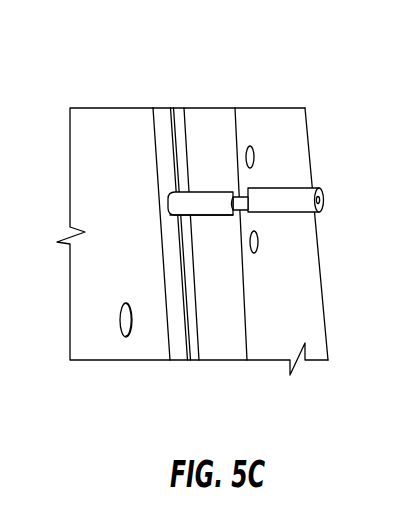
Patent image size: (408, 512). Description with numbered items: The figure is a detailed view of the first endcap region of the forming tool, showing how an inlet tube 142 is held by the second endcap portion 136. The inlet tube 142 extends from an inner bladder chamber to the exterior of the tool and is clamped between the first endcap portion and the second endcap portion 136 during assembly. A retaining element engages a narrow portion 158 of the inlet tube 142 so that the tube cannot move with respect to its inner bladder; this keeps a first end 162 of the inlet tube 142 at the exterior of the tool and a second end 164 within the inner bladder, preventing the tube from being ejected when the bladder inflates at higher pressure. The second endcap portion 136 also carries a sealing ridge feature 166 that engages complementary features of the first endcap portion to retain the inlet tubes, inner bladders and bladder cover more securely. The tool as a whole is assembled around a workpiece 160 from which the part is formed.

The second endcap portion 136 is at (278, 355).
The inlet tube 142 is at (277, 197).
The narrow portion 158 is at (250, 146).
The workpiece 160 is at (208, 192).
The first end 162 is at (304, 194).
The second end 164 is at (205, 217).
The sealing ridge feature 166 is at (180, 127).